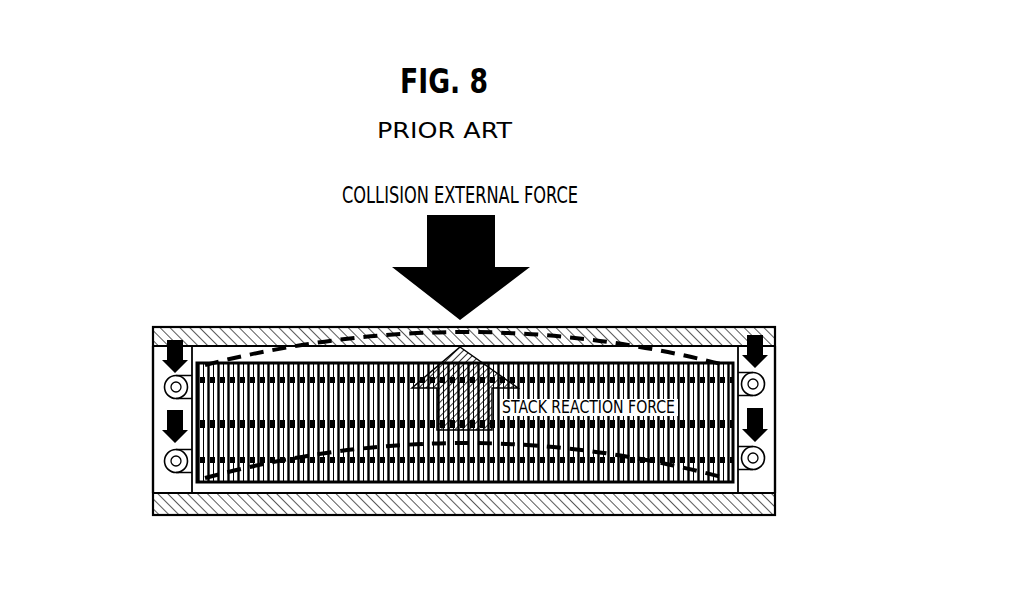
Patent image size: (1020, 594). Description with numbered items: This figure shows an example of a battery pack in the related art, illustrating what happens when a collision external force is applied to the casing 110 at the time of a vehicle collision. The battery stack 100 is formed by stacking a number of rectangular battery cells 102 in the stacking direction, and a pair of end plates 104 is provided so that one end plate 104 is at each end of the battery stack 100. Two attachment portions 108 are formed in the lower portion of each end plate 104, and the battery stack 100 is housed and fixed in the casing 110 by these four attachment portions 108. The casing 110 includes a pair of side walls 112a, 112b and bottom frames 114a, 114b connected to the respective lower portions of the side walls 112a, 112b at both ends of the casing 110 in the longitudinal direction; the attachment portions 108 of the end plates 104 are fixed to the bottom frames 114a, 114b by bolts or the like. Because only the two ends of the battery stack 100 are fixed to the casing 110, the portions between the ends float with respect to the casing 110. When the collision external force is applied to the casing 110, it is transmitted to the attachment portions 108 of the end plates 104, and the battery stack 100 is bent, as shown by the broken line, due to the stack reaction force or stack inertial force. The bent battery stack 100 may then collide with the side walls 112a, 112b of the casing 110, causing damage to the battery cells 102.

The battery stack 100 is at (693, 363).
The battery cells 102 is at (334, 363).
The end plates 104 is at (212, 327).
The attachment portions 108 is at (165, 396).
The casing 110 is at (629, 324).
The side wall 112a is at (573, 327).
The side wall 112b is at (608, 515).
The bottom frame 114a is at (153, 373).
The bottom frame 114b is at (775, 373).